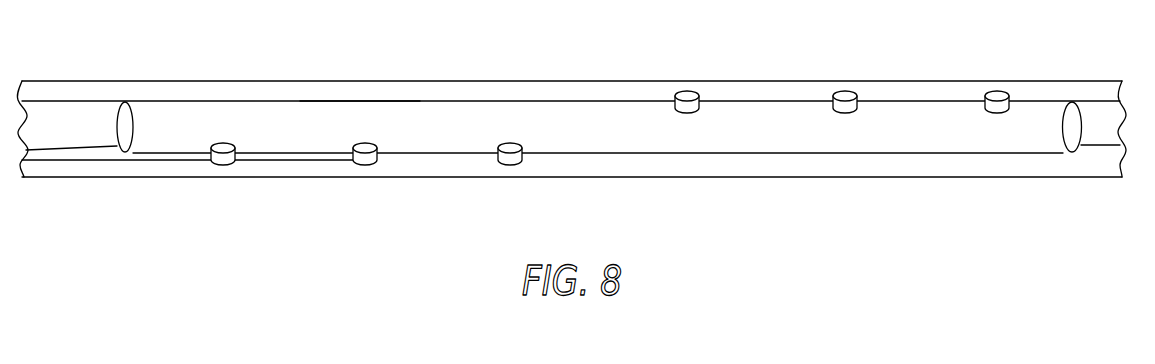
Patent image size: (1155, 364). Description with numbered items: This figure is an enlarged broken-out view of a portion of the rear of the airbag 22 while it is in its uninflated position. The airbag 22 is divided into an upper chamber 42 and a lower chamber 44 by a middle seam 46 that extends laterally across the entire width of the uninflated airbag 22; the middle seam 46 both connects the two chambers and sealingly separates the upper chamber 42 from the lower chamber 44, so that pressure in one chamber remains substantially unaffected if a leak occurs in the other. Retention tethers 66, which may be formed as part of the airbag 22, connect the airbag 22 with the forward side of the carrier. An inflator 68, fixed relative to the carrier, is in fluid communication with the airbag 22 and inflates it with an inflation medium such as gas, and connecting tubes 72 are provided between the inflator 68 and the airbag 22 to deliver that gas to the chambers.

The airbag 22 is at (553, 81).
The upper chamber 42 is at (100, 90).
The lower chamber 44 is at (100, 162).
The middle seam 46 is at (75, 118).
The retention tethers 66 is at (7, 242).
The inflator 68 is at (360, 101).
The connecting tubes 72 is at (505, 165).